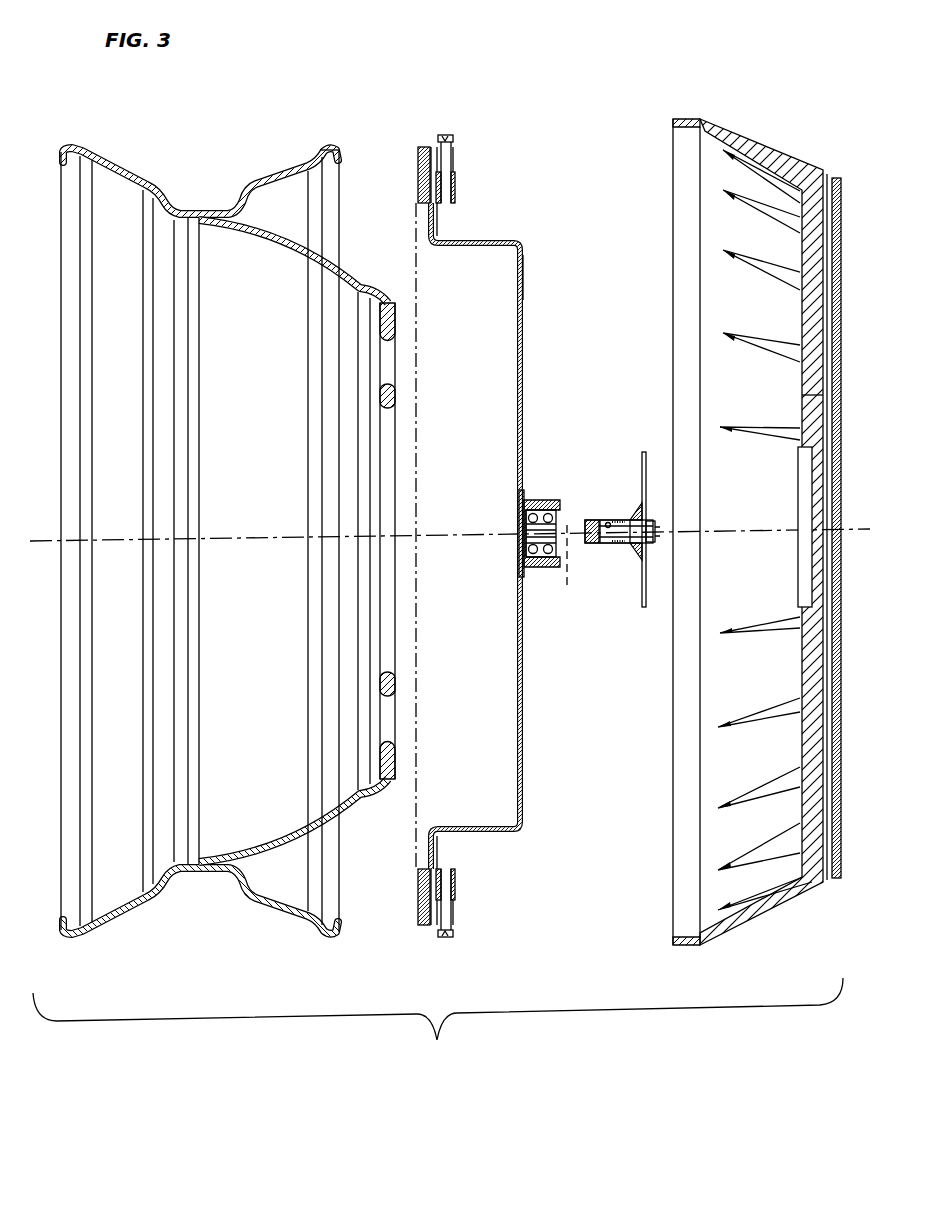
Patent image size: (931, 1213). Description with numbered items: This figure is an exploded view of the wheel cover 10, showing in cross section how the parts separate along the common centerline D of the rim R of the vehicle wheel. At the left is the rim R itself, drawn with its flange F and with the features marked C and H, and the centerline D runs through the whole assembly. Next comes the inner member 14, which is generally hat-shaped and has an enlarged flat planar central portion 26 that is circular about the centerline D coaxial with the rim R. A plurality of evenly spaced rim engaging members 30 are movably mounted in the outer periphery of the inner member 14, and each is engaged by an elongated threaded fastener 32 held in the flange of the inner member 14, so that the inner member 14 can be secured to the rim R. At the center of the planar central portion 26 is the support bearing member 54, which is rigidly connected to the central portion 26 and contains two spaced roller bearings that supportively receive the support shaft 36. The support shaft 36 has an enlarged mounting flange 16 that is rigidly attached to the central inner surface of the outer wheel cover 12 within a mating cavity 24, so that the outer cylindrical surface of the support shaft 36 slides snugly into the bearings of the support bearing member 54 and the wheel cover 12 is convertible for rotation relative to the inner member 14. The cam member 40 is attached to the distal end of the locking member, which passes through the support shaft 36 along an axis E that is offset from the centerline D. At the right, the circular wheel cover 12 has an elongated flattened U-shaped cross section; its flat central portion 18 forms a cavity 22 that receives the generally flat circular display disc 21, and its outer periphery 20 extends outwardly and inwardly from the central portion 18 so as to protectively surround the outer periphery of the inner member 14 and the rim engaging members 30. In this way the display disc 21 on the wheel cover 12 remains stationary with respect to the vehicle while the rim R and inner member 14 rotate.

The wheel cover 10 is at (850, 110).
The outer wheel cover 12 is at (675, 185).
The inner member 14 is at (530, 378).
The enlarged mounting flange 16 is at (640, 475).
The flat central portion 18 is at (800, 315).
The outer periphery 20 is at (752, 128).
The display disc 21 is at (836, 178).
The cavity 22 is at (806, 398).
The mating cavity 24 is at (805, 575).
The planar central portion 26 is at (527, 300).
The rim engaging member 30 is at (418, 177).
The threaded fastener 32 is at (455, 138).
The support shaft 36 is at (622, 548).
The cam member 40 is at (596, 520).
The support bearing member 54 is at (538, 567).
The rim R is at (152, 166).
The flange F is at (323, 140).
The centering ring C is at (382, 625).
The hole H is at (382, 705).
The centerline D is at (238, 537).
The axis of locking member E is at (567, 590).